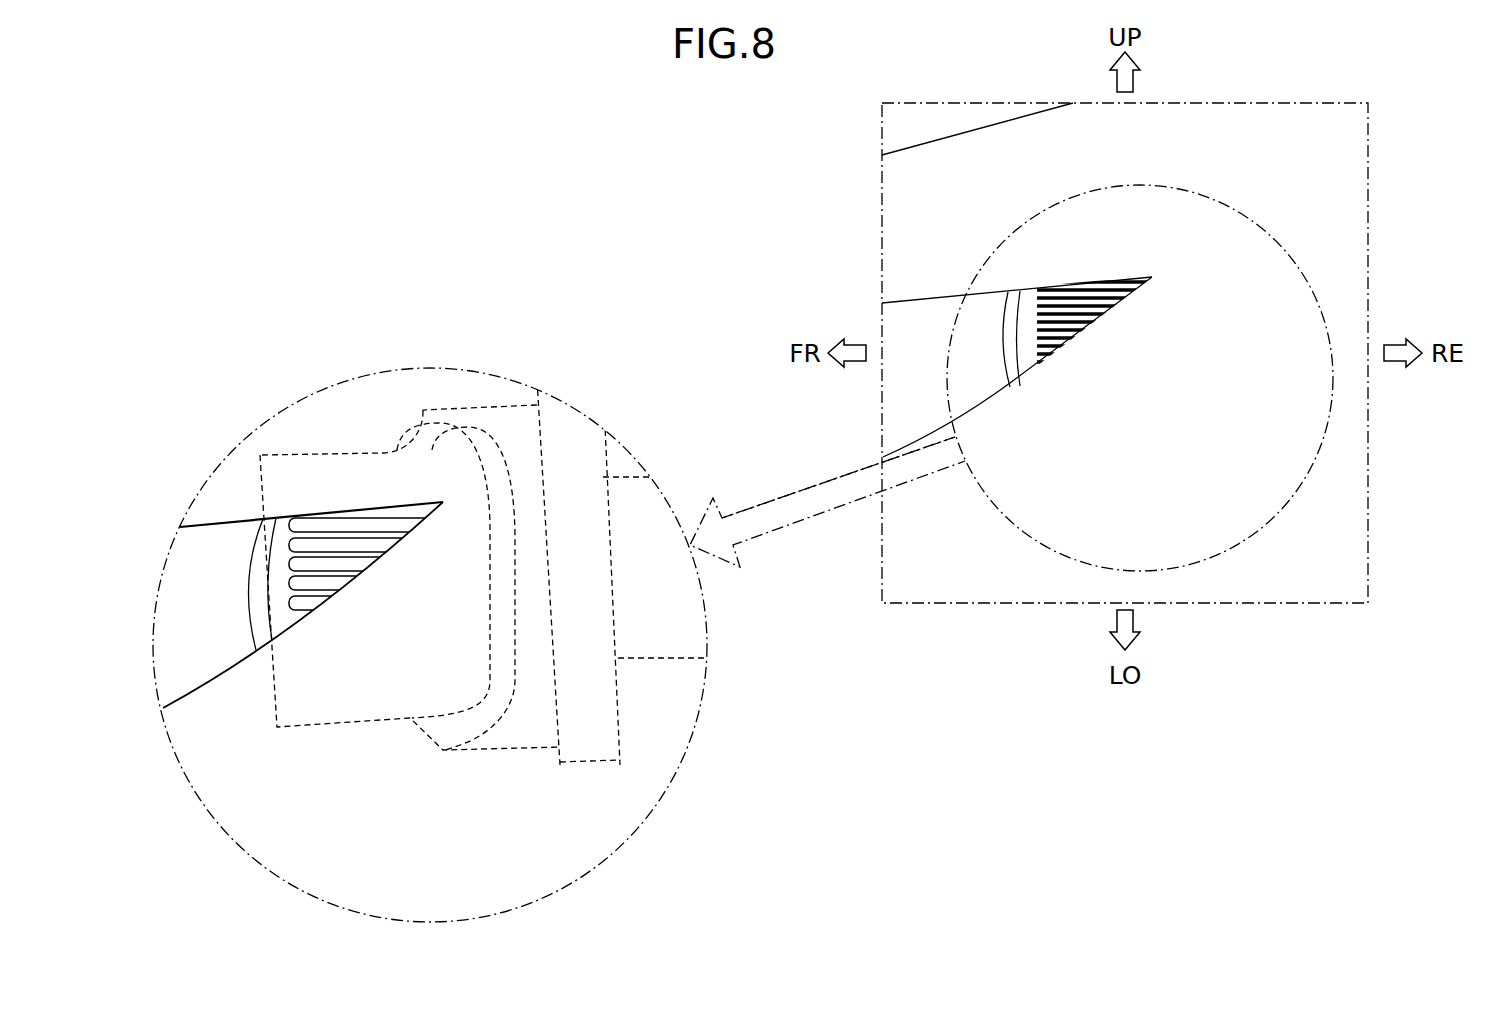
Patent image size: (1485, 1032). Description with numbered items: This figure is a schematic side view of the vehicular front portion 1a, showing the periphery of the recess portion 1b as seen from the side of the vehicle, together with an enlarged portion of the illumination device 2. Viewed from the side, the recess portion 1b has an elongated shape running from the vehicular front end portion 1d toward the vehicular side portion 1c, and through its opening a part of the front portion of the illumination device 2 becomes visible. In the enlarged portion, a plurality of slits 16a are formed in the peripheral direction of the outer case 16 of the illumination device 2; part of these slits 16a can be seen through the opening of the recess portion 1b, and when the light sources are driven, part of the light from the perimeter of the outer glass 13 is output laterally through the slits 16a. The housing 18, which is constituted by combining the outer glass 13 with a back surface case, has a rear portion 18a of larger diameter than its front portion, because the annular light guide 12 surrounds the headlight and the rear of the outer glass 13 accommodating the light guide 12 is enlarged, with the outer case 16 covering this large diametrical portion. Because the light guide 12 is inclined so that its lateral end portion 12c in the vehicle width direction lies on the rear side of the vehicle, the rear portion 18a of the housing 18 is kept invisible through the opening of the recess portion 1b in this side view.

The vehicular front portion 1a is at (882, 178).
The recess portion 1b is at (898, 326).
The vehicular side portion 1c is at (1272, 548).
The vehicular front end portion 1d is at (923, 517).
The illumination device 2 is at (1018, 330).
The light guide 12 is at (500, 557).
The lateral end portion 12c is at (513, 607).
The outer glass 13 is at (243, 585).
The outer case 16 is at (277, 517).
The slits 16a is at (347, 548).
The housing 18 is at (377, 448).
The rear portion 18a is at (477, 405).